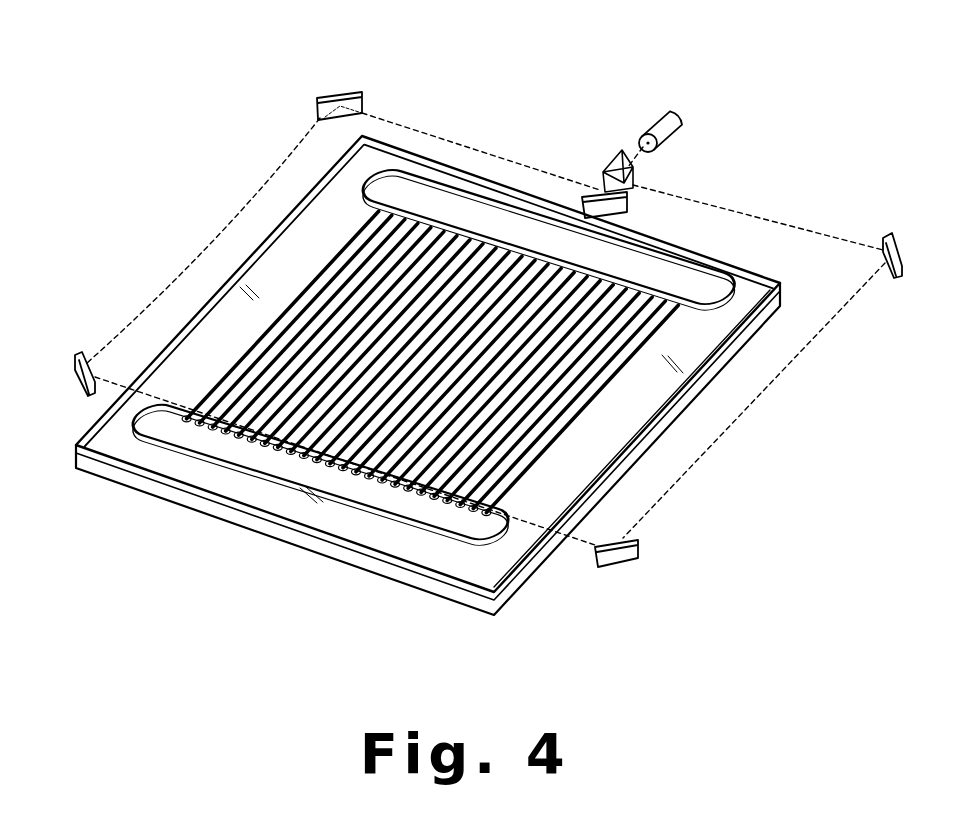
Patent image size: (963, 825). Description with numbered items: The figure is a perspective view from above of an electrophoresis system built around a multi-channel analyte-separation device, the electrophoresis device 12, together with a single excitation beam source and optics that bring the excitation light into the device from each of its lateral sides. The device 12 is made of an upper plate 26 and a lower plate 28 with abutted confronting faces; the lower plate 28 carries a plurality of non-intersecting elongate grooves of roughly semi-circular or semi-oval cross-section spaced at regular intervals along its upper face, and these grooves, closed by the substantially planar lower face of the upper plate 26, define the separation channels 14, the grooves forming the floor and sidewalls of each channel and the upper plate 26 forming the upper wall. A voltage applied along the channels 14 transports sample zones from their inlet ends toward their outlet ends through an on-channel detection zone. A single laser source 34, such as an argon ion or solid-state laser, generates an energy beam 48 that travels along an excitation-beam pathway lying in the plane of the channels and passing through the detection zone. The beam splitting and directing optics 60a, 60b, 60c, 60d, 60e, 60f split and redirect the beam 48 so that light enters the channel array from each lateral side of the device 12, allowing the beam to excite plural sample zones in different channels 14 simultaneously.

The electrophoresis device 12 is at (687, 82).
The separation channels 14 is at (533, 413).
The upper plate 26 is at (743, 313).
The lower plate 28 is at (725, 360).
The laser source 34 is at (680, 111).
The energy beam 48 is at (397, 497).
The beam splitting and directing optics 60a is at (612, 157).
The beam splitting and directing optics 60b is at (355, 90).
The beam splitting and directing optics 60c is at (888, 233).
The beam splitting and directing optics 60d is at (640, 553).
The beam splitting and directing optics 60e is at (80, 353).
The beam splitting and directing optics 60f is at (630, 203).